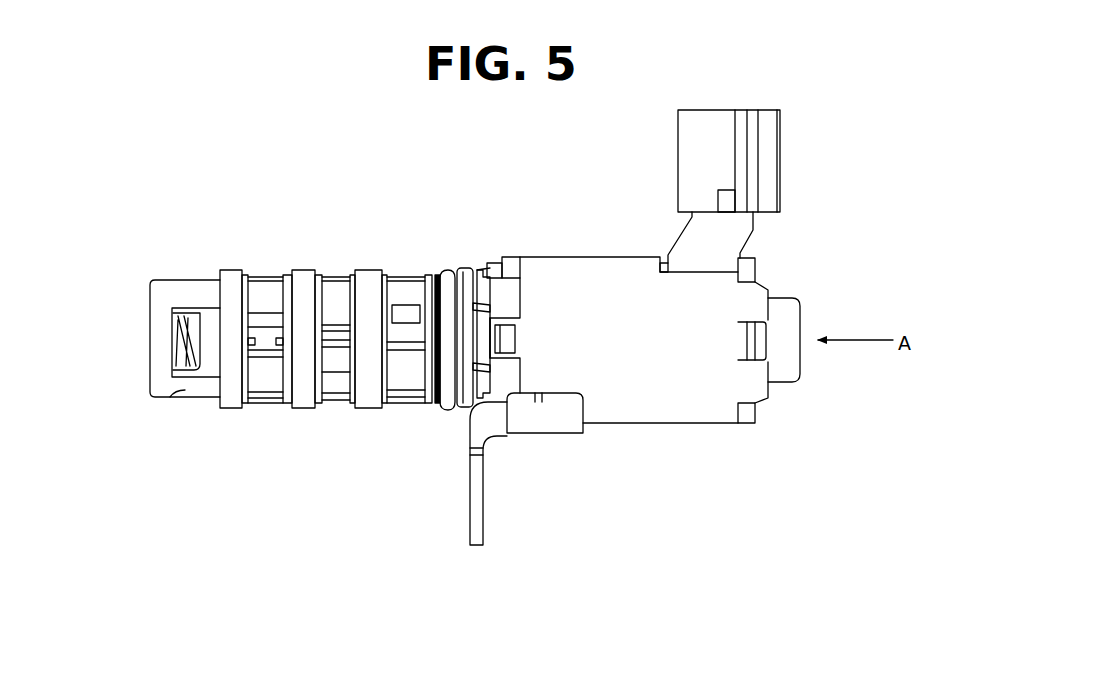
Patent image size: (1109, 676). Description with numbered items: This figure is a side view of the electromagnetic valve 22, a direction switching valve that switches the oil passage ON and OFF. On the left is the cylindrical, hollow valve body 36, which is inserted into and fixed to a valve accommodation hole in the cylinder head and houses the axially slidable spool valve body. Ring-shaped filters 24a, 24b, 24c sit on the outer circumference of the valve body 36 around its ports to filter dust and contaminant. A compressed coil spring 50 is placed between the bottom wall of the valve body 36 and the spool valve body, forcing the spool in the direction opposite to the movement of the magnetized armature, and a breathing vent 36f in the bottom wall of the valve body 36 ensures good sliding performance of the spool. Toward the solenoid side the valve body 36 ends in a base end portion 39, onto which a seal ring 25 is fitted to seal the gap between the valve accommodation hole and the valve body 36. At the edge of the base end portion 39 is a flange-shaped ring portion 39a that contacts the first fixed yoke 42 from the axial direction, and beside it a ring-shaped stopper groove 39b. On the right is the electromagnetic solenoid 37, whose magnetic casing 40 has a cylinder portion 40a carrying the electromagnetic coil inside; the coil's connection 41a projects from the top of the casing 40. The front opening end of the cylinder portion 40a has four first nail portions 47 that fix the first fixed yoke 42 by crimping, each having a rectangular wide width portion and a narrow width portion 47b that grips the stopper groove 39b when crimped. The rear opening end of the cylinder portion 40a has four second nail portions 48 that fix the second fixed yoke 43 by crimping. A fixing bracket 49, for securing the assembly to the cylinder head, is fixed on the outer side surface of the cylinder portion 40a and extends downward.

The electromagnetic valve 22 is at (525, 215).
The valve body 36 is at (228, 262).
The breathing vent 36f is at (198, 398).
The compressed coil spring 50 is at (177, 357).
The ring-shaped filter 24a is at (267, 278).
The ring-shaped filter 24b is at (336, 282).
The ring-shaped filter 24c is at (405, 292).
The base end portion 39 is at (463, 312).
The ring portion 39a is at (488, 267).
The stopper groove 39b is at (473, 340).
The seal ring 25 is at (440, 408).
The narrow width portion 47b is at (470, 280).
The first fixed yoke 42 is at (500, 262).
The first nail portion 47 is at (493, 297).
The electromagnetic solenoid 37 is at (618, 255).
The casing 40 is at (673, 410).
The cylinder portion 40a is at (628, 425).
The second nail portion 48 is at (762, 293).
The second fixed yoke 43 is at (748, 343).
The coil terminal 41a is at (772, 162).
The fixing bracket 49 is at (480, 527).